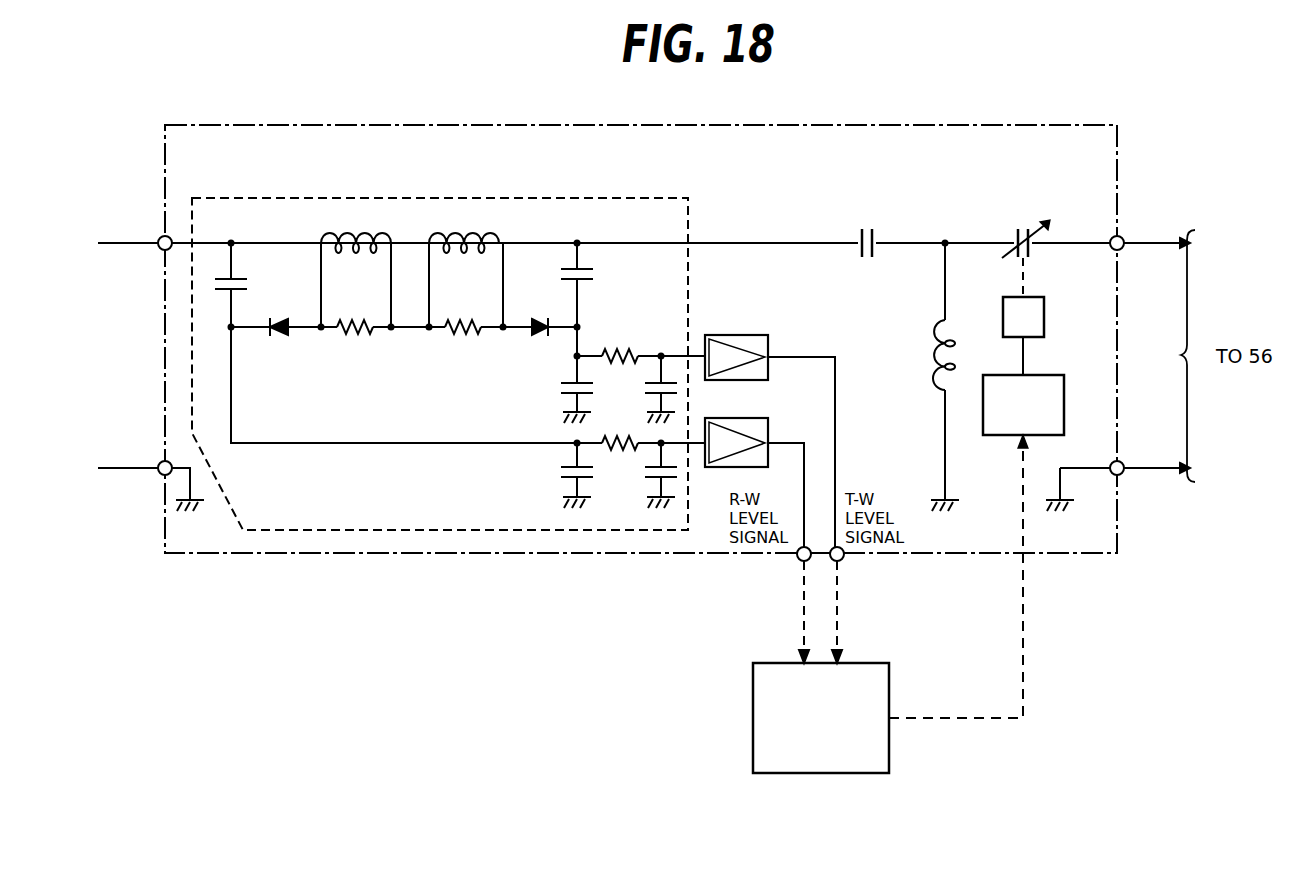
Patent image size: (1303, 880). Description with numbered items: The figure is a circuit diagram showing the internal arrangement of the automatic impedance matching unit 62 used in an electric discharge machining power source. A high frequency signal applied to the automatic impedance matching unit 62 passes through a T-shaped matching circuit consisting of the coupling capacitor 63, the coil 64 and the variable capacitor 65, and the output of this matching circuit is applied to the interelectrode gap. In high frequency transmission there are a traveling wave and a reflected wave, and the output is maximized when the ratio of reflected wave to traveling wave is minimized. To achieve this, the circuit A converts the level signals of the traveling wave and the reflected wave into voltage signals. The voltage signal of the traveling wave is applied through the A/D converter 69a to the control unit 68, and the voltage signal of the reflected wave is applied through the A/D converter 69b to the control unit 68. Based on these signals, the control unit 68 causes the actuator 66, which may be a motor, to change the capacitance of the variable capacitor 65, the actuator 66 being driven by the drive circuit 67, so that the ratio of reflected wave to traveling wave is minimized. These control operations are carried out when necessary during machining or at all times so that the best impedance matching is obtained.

The automatic impedance matching unit 62 is at (212, 125).
The circuit for converting level signals into voltage signals A is at (620, 198).
The coupling capacitor 63 is at (866, 228).
The coil 64 is at (936, 355).
The variable capacitor 65 is at (1022, 228).
The actuator 66 is at (1044, 306).
The drive circuit 67 is at (1046, 375).
The control unit 68 is at (889, 688).
The A/D converter 69a is at (744, 335).
The A/D converter 69b is at (746, 418).